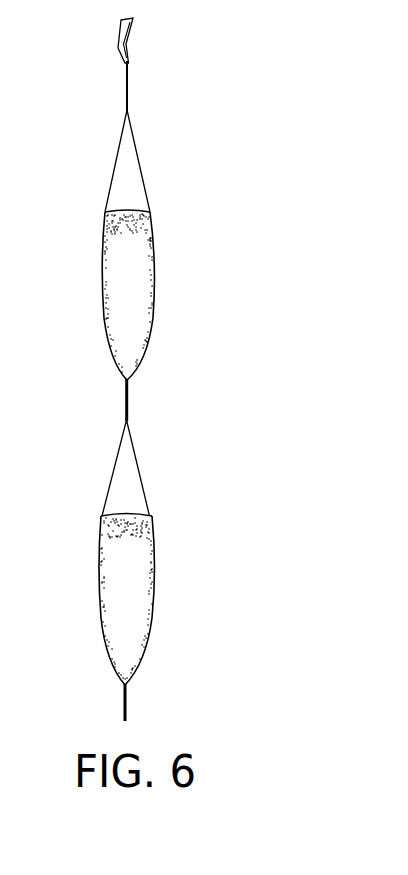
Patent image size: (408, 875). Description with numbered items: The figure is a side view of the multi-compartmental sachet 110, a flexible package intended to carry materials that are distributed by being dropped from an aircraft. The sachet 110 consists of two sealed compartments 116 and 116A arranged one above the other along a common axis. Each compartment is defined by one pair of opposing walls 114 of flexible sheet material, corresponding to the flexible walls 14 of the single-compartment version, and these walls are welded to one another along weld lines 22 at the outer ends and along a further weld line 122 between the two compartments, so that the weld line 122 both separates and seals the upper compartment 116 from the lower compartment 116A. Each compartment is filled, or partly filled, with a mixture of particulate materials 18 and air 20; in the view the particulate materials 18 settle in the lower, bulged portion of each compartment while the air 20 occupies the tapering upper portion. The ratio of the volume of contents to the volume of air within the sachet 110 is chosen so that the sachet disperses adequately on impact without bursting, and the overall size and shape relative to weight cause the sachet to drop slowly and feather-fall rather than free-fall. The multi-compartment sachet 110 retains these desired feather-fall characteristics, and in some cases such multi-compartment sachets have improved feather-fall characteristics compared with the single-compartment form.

The sachet 110 is at (74, 191).
The weld lines 22 is at (120, 77).
The sealed compartment 116 is at (123, 161).
The flexible walls 14 is at (146, 252).
The particulate materials 18 is at (127, 283).
The weld line 122 is at (120, 388).
The air 20 is at (132, 468).
The sealed compartment 116A is at (167, 468).
The opposing walls 114 is at (147, 555).